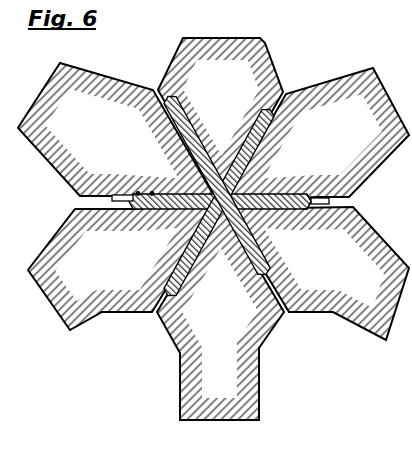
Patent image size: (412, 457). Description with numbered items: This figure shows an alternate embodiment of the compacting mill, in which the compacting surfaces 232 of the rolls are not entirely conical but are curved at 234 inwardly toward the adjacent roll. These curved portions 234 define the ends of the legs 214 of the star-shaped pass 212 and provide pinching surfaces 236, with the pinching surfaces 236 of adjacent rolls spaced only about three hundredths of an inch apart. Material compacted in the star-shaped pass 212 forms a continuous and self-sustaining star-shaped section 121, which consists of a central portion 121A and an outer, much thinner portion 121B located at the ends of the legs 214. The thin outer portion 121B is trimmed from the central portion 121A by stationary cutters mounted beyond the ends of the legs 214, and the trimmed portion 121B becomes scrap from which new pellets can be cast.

The star-shaped section 121 is at (265, 196).
The central portion 121A is at (287, 211).
The outer, much thinner portion 121B is at (322, 198).
The star-shaped pass 212 is at (174, 211).
The legs 214 is at (142, 210).
The compacting surfaces 232 is at (152, 192).
The curved portions 234 is at (138, 192).
The pinching surfaces 236 is at (112, 198).